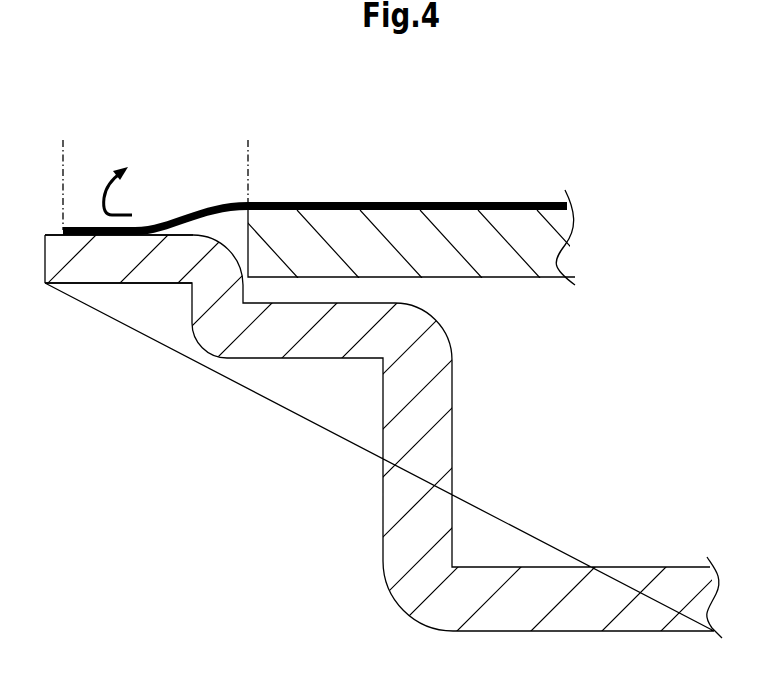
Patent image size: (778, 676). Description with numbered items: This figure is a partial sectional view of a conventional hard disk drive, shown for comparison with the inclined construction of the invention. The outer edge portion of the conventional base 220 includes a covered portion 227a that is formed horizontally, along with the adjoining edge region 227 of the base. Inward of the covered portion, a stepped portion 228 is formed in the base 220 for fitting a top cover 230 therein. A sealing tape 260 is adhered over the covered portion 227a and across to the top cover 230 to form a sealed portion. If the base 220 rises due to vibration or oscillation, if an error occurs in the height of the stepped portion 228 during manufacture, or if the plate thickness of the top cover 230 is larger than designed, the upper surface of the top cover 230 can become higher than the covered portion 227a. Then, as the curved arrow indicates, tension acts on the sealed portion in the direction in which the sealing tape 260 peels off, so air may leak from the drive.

The base 220 is at (241, 377).
The flange portion 227 is at (92, 272).
The covered portion 227a is at (63, 151).
The stepped portion 228 is at (262, 315).
The top cover 230 is at (498, 267).
The sealing tape 260 is at (390, 203).